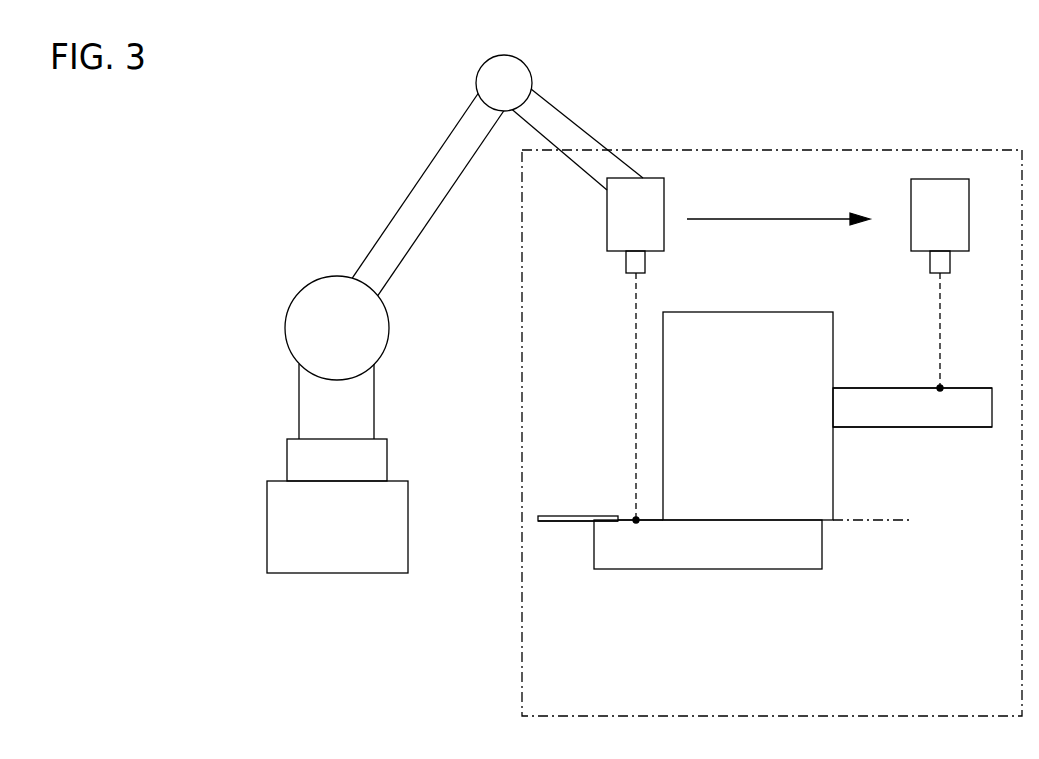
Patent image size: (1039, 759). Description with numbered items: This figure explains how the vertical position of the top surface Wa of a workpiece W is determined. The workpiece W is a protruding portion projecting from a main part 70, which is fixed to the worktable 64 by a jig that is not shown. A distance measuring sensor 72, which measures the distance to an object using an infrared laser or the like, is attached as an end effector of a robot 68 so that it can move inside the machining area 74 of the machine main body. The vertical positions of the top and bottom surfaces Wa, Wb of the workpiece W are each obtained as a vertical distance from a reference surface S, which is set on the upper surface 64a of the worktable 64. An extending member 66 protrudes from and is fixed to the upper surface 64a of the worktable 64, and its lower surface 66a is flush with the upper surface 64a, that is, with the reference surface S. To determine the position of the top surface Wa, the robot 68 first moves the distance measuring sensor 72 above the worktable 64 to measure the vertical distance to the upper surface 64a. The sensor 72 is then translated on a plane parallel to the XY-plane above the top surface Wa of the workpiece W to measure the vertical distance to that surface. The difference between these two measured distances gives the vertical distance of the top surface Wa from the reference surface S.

The robot 68 is at (320, 205).
The machining area 74 is at (924, 150).
The distance measuring sensor 72 is at (648, 196).
The main part 70 is at (743, 327).
The workpiece W is at (952, 408).
The top surface Wa is at (858, 388).
The bottom surface Wb is at (858, 427).
The reference surface S is at (882, 520).
The worktable 64 is at (708, 552).
The upper surface 64a is at (650, 519).
The extending member 66 is at (560, 516).
The lower surface 66a is at (566, 523).